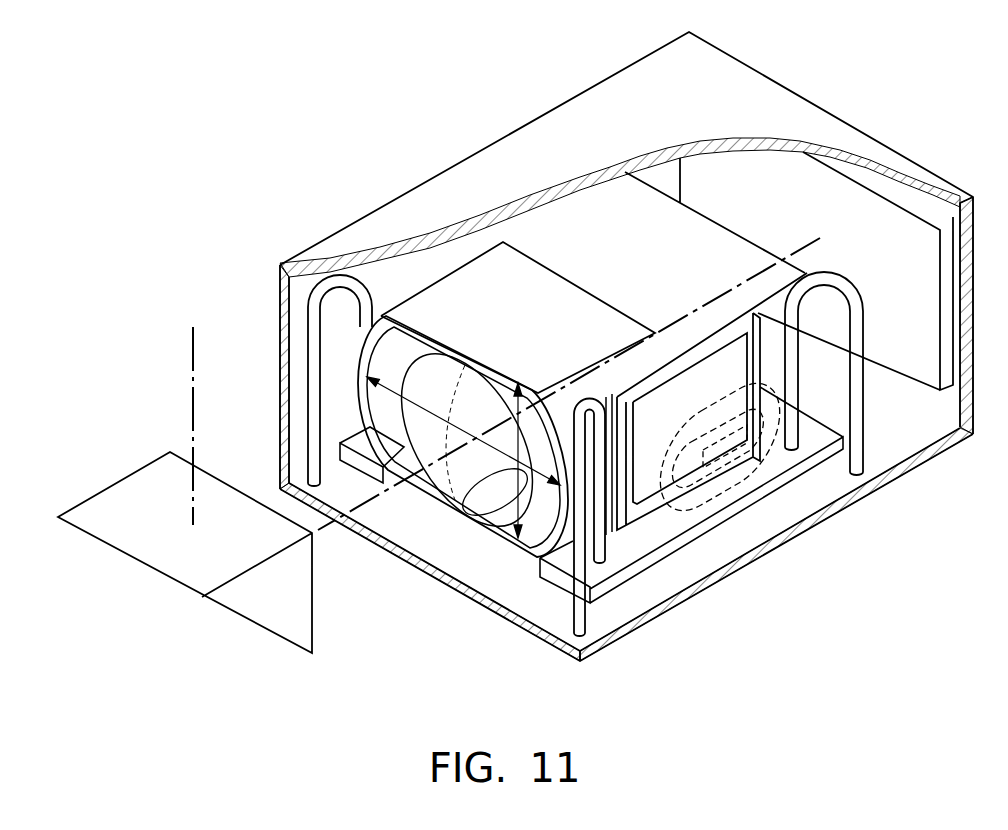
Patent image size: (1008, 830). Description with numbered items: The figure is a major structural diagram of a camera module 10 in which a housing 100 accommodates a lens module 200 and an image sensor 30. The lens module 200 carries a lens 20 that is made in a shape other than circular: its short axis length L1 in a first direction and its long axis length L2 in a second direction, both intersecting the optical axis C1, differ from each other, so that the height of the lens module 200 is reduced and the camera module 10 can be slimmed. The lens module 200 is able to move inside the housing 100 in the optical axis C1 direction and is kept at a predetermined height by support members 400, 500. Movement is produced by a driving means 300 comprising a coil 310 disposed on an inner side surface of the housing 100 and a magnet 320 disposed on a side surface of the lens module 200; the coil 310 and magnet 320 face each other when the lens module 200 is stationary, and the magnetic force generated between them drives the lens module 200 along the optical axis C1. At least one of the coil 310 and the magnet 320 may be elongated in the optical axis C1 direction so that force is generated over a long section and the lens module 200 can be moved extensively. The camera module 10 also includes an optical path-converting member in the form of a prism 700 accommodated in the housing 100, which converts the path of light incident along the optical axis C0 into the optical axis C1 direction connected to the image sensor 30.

The camera module 10 is at (820, 92).
The lens 20 is at (423, 443).
The image sensor 30 is at (897, 234).
The housing 100 is at (877, 482).
The lens module 200 is at (477, 293).
The driving means 300 is at (733, 531).
The coil 310 is at (727, 497).
The magnet 320 is at (645, 497).
The support member 400 is at (600, 543).
The support member 500 is at (585, 604).
The prism 700 is at (262, 607).
The optical axis C0 is at (194, 373).
The optical axis C1 is at (797, 250).
The short axis length L1 is at (520, 478).
The long axis length L2 is at (487, 458).